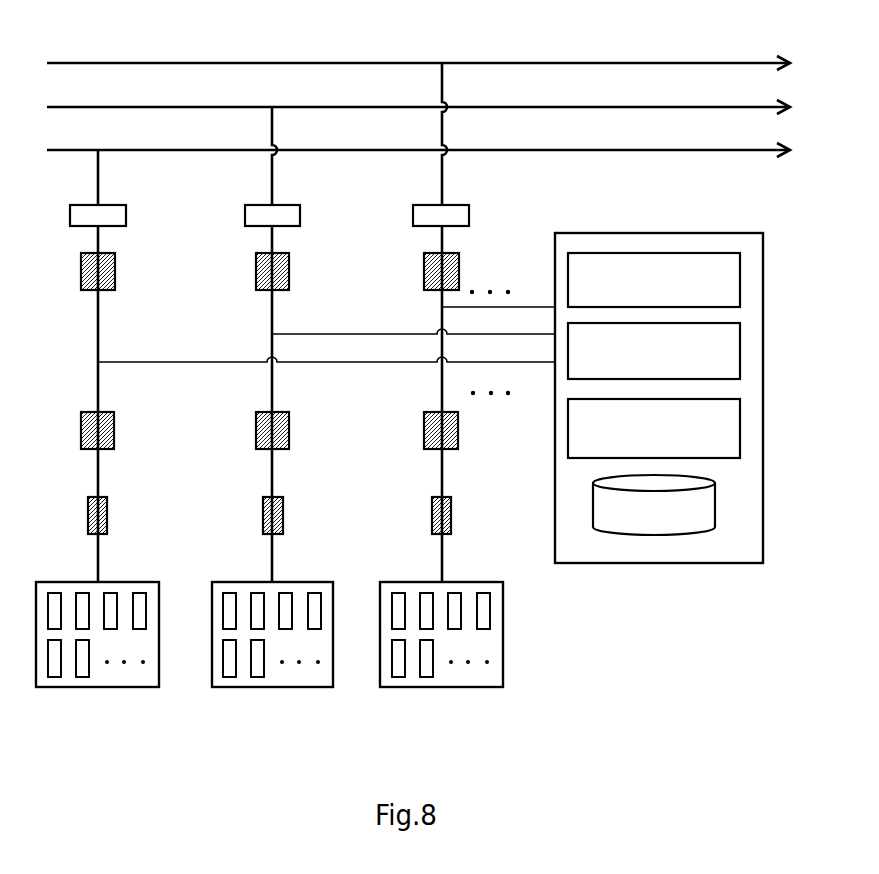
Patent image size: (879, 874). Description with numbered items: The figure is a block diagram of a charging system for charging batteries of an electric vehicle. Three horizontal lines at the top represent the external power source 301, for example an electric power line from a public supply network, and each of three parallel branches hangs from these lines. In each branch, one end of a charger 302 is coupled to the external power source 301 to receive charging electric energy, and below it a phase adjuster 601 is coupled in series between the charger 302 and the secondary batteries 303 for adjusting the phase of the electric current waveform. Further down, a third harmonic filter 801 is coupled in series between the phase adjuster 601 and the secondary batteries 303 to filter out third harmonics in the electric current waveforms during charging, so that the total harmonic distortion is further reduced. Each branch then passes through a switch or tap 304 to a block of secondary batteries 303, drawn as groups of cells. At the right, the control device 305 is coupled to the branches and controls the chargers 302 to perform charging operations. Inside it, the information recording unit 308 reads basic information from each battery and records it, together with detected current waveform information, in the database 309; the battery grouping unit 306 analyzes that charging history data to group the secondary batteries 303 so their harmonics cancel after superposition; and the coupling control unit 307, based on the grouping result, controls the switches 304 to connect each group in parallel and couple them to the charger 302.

The external power source 301 is at (141, 63).
The charger 302 is at (130, 214).
The phase adjuster 601 is at (115, 270).
The third harmonic filter 801 is at (114, 428).
The switch or tap 304 is at (110, 514).
The secondary battery 303 is at (100, 687).
The control device 305 is at (692, 434).
The battery grouping unit 306 is at (740, 282).
The coupling control unit 307 is at (740, 354).
The information recording unit 308 is at (740, 432).
The database 309 is at (716, 506).